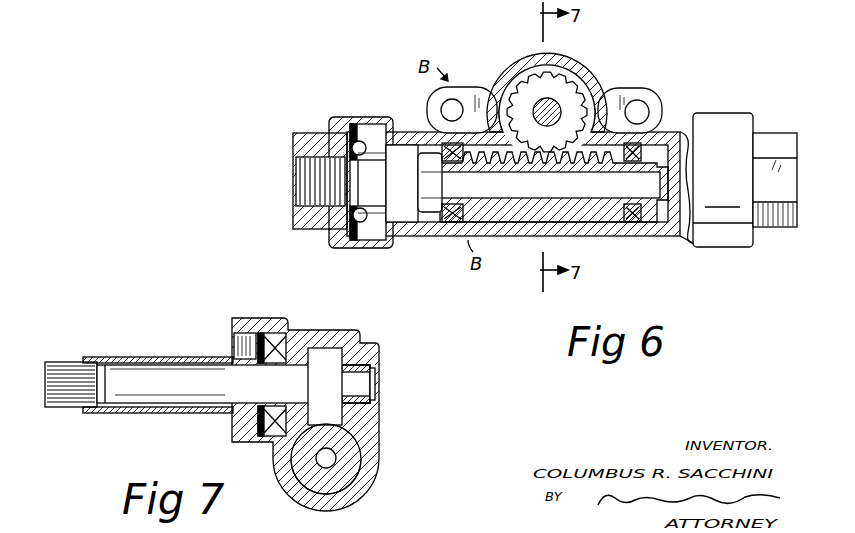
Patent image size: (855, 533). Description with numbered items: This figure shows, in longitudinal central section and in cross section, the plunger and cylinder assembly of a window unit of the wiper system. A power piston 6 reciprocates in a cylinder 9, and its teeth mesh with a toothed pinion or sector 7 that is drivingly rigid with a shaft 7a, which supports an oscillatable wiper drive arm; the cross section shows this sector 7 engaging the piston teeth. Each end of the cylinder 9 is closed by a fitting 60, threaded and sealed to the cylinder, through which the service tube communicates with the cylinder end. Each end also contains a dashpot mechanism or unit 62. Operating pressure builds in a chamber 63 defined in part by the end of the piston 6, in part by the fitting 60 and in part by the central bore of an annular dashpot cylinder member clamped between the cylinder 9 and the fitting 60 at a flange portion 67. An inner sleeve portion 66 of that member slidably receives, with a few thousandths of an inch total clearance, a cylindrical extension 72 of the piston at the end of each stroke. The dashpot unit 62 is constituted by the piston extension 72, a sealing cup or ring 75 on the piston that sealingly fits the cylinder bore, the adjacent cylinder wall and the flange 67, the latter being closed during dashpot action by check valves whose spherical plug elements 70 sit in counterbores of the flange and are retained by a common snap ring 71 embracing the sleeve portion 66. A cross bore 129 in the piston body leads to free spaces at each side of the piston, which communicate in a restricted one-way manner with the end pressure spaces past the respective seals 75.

In FIG. 6, the power piston 6 is at (527, 214).
In FIG. 7, the power piston 6 is at (350, 467).
In FIG. 6, the pinion or sector 7 is at (565, 126).
In FIG. 7, the pinion or sector 7 is at (332, 413).
In FIG. 6, the shaft 7a is at (553, 110).
In FIG. 7, the shaft 7a is at (222, 378).
In FIG. 6, the cylinder 9 is at (606, 224).
In FIG. 7, the cylinder 9 is at (348, 500).
In FIG. 6, the fitting 60 is at (338, 121).
In FIG. 6, the dashpot mechanism or unit 62 is at (390, 161).
In FIG. 6, the chamber 63 is at (318, 228).
In FIG. 6, the inner sleeve portion 66 is at (371, 158).
In FIG. 6, the flange portion 67 is at (355, 125).
In FIG. 6, the plug elements 70 is at (367, 144).
In FIG. 6, the snap ring 71 is at (386, 157).
In FIG. 6, the cylindrical extension 72 is at (430, 212).
In FIG. 6, the sealing cup or ring 75 is at (450, 223).
In FIG. 7, the cross bore 129 is at (293, 448).